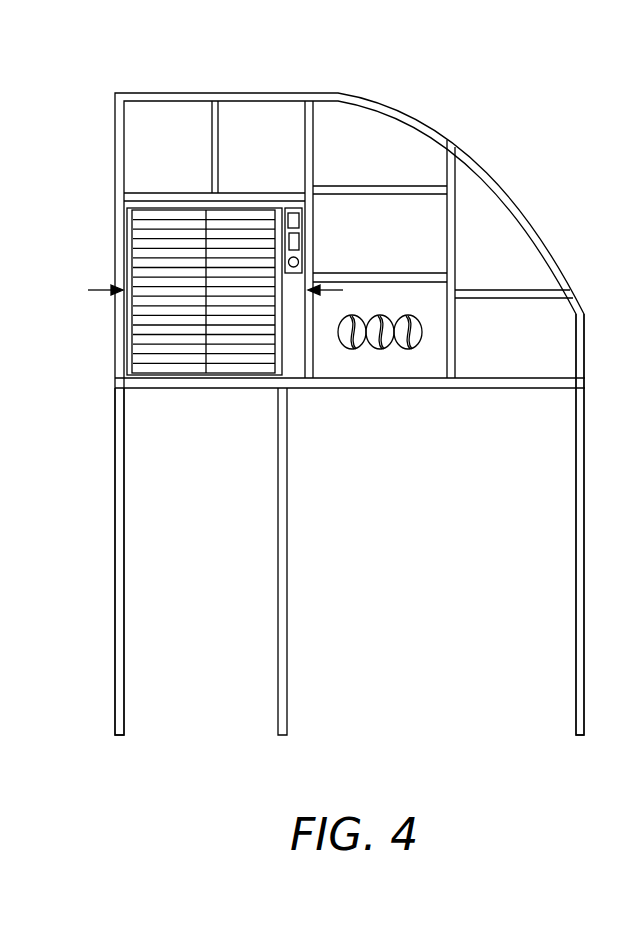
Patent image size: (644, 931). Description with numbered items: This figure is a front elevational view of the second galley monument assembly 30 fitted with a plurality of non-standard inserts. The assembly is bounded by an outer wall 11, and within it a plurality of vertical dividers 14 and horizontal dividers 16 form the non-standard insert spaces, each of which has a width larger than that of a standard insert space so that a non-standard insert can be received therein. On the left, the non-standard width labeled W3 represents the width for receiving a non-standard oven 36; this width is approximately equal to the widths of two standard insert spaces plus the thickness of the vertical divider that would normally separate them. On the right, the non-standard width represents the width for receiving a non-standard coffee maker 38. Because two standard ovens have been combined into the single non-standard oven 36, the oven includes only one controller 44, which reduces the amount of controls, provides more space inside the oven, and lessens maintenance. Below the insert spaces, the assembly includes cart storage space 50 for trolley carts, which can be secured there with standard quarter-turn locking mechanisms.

The second galley monument assembly 30 is at (548, 98).
The outer wall 11 is at (115, 418).
The vertical dividers 14 is at (115, 225).
The horizontal dividers 16 is at (380, 186).
The width of the non-standard insert space W3 is at (195, 292).
The non-standard oven 36 is at (235, 353).
The non-standard coffee maker 38 is at (392, 352).
The controller 44 is at (298, 221).
The cart storage space 50 is at (212, 558).